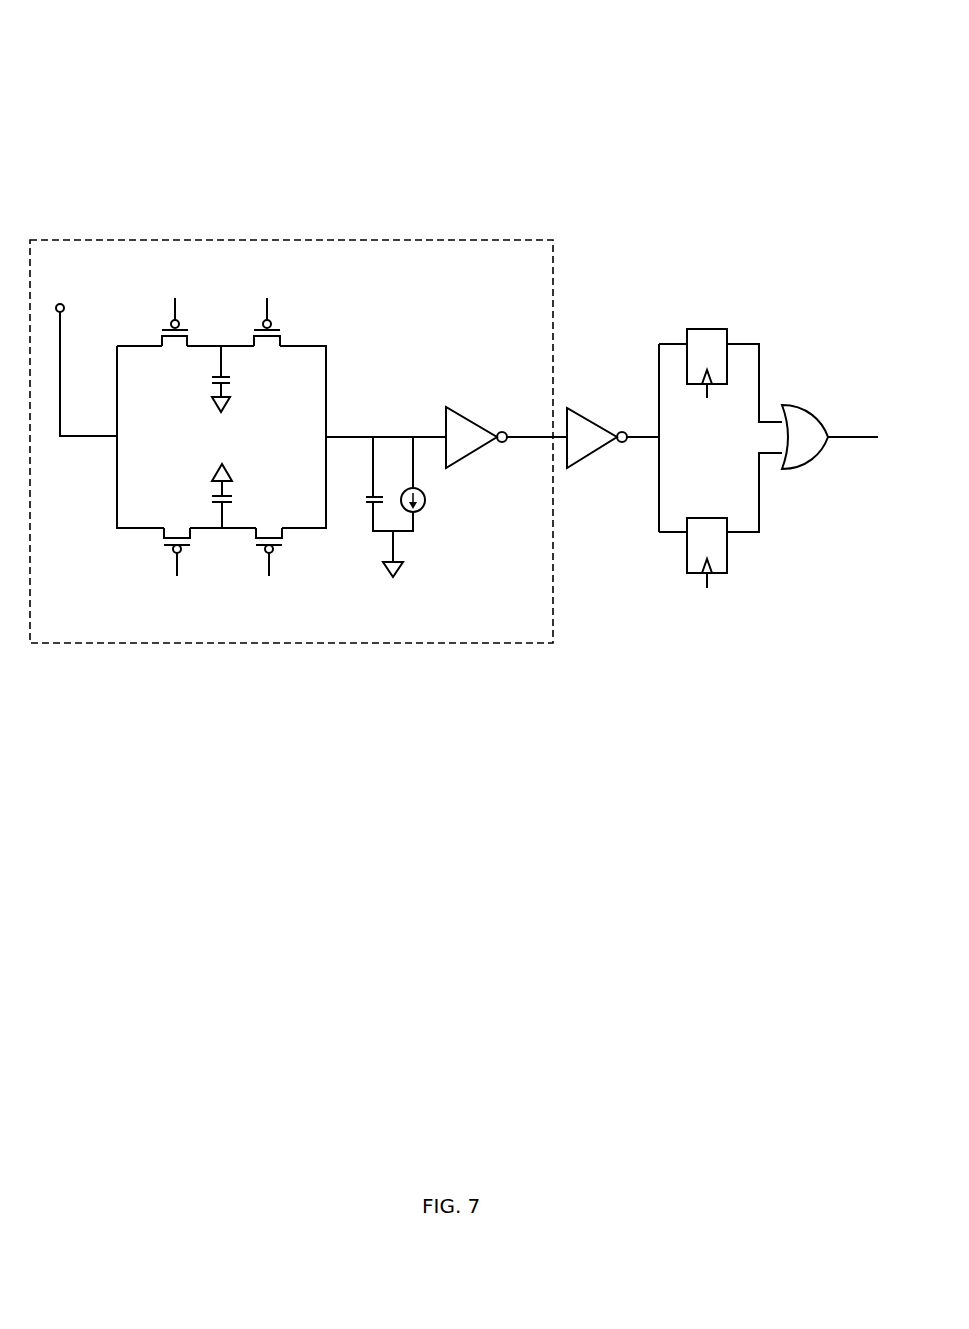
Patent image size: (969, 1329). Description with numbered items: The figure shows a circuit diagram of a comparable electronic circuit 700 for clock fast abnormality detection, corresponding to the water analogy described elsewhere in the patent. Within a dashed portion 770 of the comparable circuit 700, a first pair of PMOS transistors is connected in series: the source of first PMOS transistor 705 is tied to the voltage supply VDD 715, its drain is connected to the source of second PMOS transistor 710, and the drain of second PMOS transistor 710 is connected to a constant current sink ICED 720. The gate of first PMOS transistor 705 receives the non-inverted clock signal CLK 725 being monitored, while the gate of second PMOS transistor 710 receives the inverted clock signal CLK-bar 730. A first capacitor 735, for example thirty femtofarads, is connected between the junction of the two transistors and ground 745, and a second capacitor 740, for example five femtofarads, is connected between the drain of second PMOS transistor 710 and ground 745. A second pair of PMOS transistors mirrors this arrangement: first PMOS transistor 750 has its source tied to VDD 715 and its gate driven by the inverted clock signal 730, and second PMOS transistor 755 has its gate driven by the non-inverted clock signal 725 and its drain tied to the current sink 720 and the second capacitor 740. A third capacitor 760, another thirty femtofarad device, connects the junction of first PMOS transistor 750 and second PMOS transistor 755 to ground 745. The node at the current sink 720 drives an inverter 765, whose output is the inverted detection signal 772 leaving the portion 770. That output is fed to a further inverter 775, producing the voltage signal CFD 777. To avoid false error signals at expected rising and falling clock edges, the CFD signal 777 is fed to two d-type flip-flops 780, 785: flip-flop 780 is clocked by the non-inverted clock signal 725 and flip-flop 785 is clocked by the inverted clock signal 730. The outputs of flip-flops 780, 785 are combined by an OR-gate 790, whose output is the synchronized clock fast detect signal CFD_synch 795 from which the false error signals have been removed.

The comparable electronic circuit 700 is at (150, 94).
The first PMOS transistor of the first pair 705 is at (188, 363).
The second PMOS transistor of the first pair 710 is at (280, 363).
The voltage supply VDD 715 is at (73, 300).
The constant current sink ICED 720 is at (455, 505).
The clock signal CLK 725 is at (720, 432).
The inverted clock signal CLK-bar 730 is at (281, 265).
The first capacitor 735 is at (206, 387).
The second capacitor 740 is at (358, 505).
The ground 745 is at (406, 617).
The first PMOS transistor of the second pair 750 is at (190, 526).
The second PMOS transistor of the second pair 755 is at (282, 526).
The third capacitor 760 is at (207, 504).
The inverter 765 is at (481, 444).
The portion of comparable circuit 770 is at (525, 276).
The inverted CFD signal 772 is at (404, 397).
The inverter 775 is at (598, 445).
The voltage signal CFD 777 is at (655, 432).
The d-type flip-flop 780 is at (720, 360).
The d-type flip-flop 785 is at (720, 551).
The OR-gate 790 is at (818, 444).
The synchronized clock fast detect (CFD_synch) signal 795 is at (871, 432).